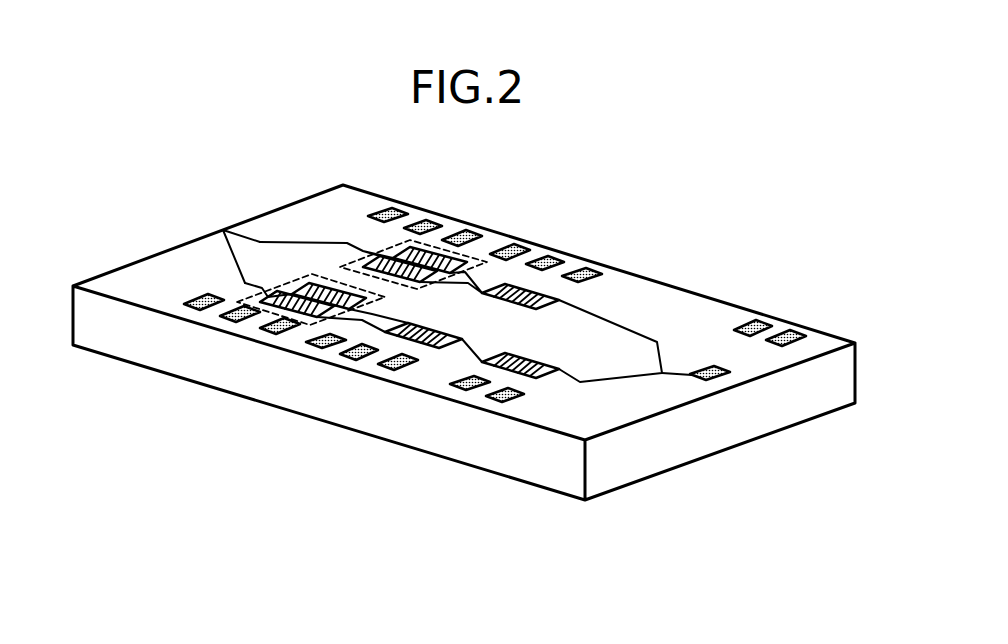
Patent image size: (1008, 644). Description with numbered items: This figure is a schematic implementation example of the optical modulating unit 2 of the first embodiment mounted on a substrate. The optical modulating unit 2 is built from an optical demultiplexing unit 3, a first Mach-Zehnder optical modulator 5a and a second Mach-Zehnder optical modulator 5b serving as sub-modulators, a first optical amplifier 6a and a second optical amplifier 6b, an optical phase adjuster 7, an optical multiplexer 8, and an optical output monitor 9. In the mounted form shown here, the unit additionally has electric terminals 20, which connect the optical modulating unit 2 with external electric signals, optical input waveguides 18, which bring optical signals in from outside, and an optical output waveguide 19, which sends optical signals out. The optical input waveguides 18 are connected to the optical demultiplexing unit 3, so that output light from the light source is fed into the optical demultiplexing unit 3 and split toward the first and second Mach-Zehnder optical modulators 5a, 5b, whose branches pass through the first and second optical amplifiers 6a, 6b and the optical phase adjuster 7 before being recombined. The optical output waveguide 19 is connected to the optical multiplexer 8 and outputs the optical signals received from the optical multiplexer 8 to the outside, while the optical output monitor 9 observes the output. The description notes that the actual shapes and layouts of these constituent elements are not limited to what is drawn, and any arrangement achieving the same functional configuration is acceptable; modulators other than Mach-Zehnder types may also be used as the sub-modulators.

The optical modulating unit 2 is at (190, 381).
The optical demultiplexing unit 3 is at (253, 242).
The first Mach-Zehnder optical modulator 5a is at (432, 240).
The second Mach-Zehnder optical modulator 5b is at (303, 325).
The first optical amplifier 6a is at (521, 289).
The second optical amplifier 6b is at (425, 348).
The optical phase adjuster 7 is at (522, 378).
The optical multiplexer 8 is at (664, 377).
The optical output monitor 9 is at (707, 367).
The optical input waveguides 18 is at (223, 230).
The optical output waveguide 19 is at (672, 375).
The electric terminals 20 is at (590, 268).